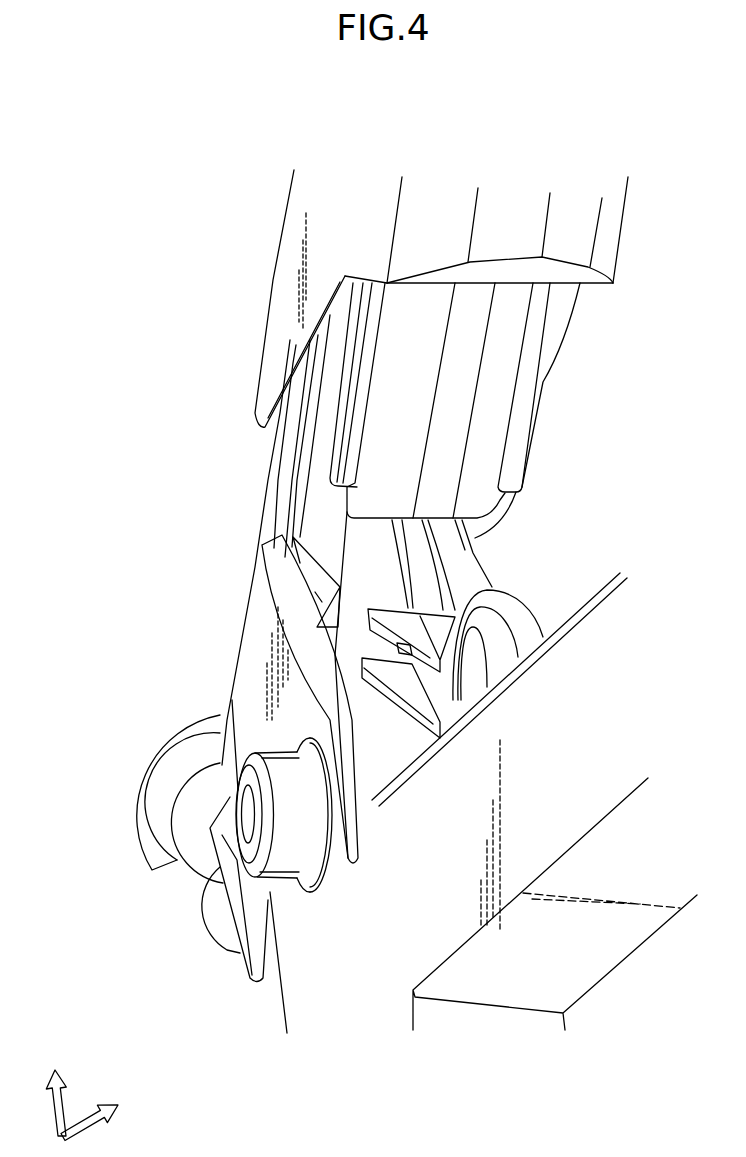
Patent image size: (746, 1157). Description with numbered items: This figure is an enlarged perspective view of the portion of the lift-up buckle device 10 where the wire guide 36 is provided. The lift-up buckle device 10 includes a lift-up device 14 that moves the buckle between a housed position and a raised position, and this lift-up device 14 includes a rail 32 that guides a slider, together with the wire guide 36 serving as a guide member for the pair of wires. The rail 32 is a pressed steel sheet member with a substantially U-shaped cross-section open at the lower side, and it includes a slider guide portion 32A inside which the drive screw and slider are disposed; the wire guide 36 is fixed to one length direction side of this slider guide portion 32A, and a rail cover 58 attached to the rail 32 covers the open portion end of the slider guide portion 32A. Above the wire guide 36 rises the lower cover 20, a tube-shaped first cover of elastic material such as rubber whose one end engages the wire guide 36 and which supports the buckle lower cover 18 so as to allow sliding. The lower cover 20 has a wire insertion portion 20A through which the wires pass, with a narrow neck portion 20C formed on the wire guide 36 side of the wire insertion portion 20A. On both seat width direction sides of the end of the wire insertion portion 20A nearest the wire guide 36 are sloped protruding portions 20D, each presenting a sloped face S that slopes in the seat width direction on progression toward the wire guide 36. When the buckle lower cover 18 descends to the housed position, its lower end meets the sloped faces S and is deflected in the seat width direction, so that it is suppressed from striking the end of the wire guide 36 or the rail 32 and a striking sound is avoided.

The lift-up buckle device 10 is at (158, 163).
The lift-up device 14 is at (588, 550).
The buckle lower cover 18 is at (282, 240).
The lower cover 20 is at (532, 428).
The wire insertion portion 20A is at (328, 505).
The narrow portion 20C is at (473, 527).
The sloped protruding portion 20D is at (300, 560).
The sloped face S is at (315, 592).
The rail 32 is at (592, 591).
The slider guide portion 32A is at (603, 588).
The wire guide 36 is at (372, 708).
The rail cover 58 is at (612, 945).